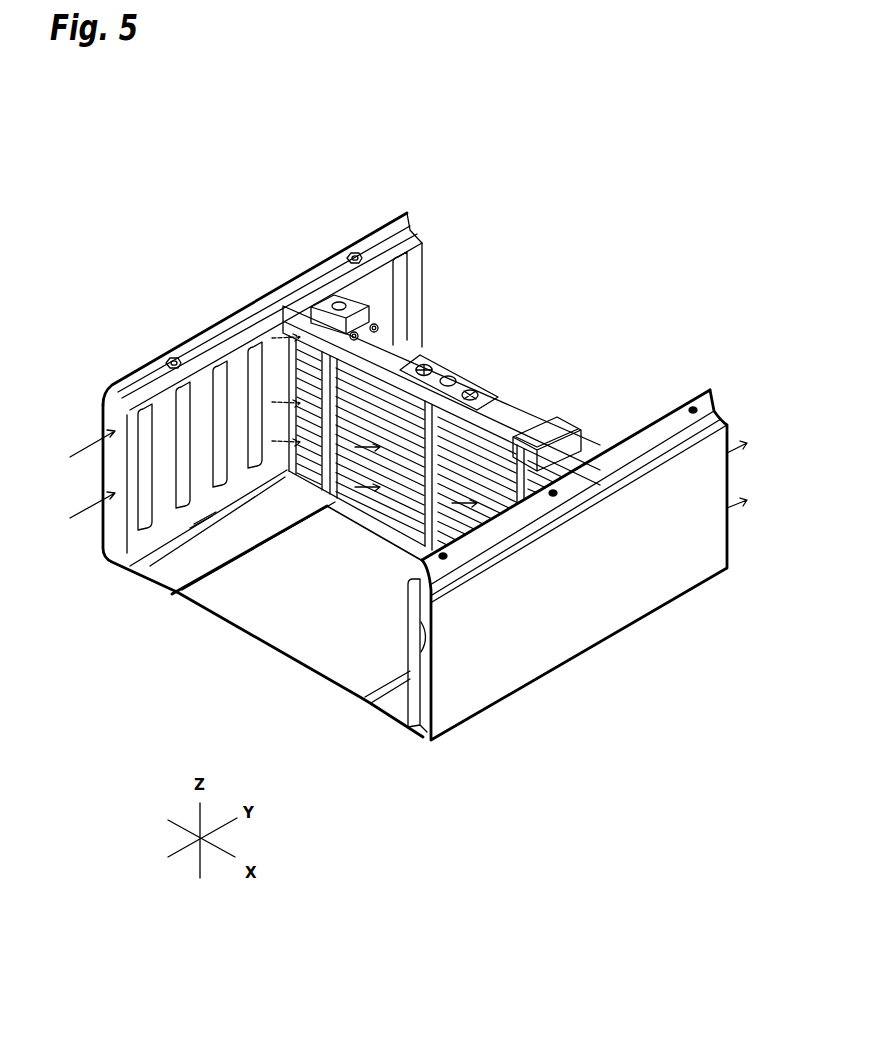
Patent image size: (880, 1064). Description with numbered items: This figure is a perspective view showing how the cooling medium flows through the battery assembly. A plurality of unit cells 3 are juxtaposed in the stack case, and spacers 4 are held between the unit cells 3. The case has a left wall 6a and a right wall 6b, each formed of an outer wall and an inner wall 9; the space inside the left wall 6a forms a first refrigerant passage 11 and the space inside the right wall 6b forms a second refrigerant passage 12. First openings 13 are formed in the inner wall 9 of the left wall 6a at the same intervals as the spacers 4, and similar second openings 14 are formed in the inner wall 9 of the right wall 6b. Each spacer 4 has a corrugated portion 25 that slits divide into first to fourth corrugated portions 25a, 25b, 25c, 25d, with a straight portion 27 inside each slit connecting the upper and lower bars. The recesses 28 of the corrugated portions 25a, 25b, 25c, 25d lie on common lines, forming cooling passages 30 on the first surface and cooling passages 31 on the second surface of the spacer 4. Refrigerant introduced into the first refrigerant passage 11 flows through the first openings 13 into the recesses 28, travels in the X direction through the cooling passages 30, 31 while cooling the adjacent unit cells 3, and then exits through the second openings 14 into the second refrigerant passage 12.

The unit cell 3 is at (500, 392).
The spacer 4 is at (490, 415).
The left wall 6a is at (423, 257).
The right wall 6b is at (726, 427).
The inner wall 9 is at (242, 357).
The first refrigerant passage 11 is at (103, 403).
The second refrigerant passage 12 is at (417, 600).
The first opening 13 is at (290, 362).
The second opening 14 is at (427, 633).
The corrugated portion 25 is at (233, 368).
The first corrugated portion 25a is at (308, 340).
The second corrugated portion 25b is at (383, 387).
The third corrugated portion 25c is at (453, 423).
The fourth corrugated portion 25d is at (528, 440).
The straight portion 27 is at (324, 330).
The recess 28 is at (317, 447).
The cooling passage 30 is at (360, 437).
The cooling passage 31 is at (347, 447).